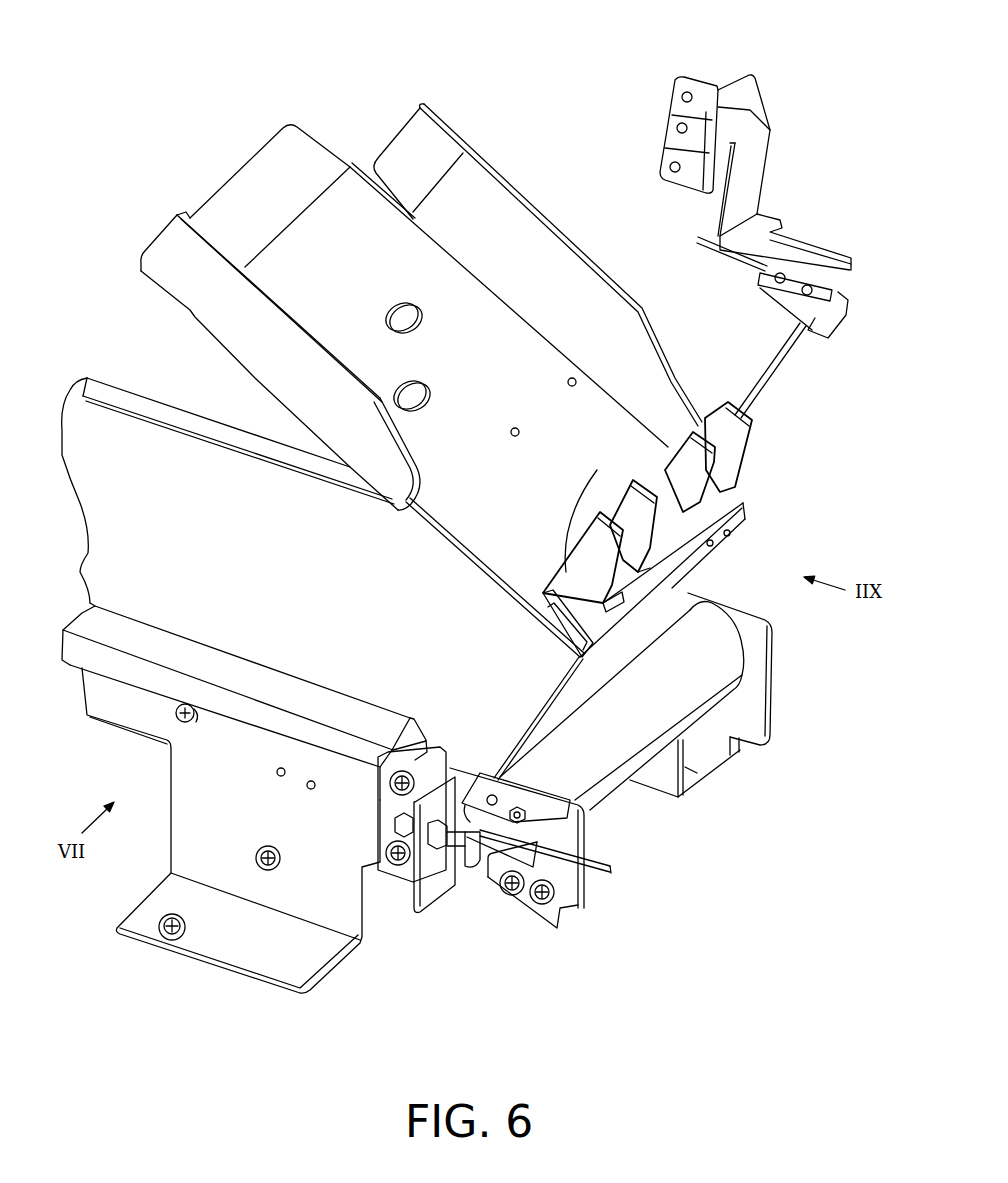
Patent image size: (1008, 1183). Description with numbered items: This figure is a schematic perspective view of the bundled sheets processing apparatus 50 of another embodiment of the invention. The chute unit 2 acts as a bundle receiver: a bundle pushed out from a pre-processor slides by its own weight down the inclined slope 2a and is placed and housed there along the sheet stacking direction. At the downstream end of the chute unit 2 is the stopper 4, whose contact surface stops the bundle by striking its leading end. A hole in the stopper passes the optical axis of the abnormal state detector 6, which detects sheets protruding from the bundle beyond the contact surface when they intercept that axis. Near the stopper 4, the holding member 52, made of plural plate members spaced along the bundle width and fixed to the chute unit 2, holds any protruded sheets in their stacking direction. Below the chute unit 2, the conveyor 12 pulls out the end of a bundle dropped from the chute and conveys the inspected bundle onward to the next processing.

The bundled sheets processing apparatus 50 is at (568, 97).
The chute unit 2 is at (146, 258).
The slope 2a is at (489, 375).
The conveyor 12 is at (258, 588).
The stopper 4 is at (745, 522).
The holding member 52 is at (630, 497).
The abnormal state detector 6 is at (845, 314).